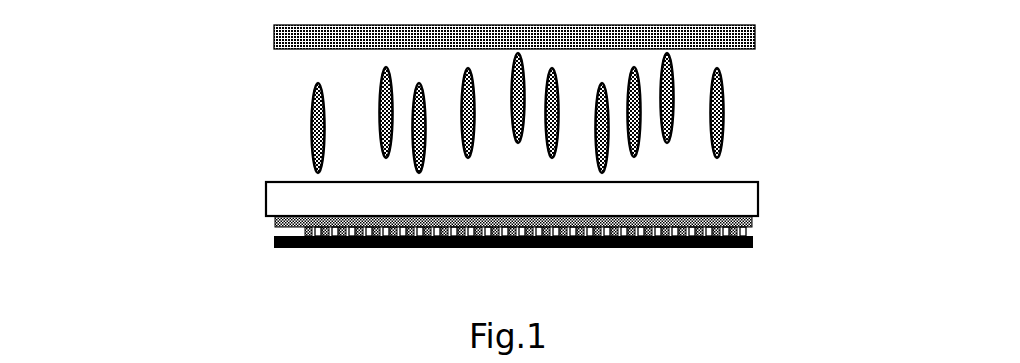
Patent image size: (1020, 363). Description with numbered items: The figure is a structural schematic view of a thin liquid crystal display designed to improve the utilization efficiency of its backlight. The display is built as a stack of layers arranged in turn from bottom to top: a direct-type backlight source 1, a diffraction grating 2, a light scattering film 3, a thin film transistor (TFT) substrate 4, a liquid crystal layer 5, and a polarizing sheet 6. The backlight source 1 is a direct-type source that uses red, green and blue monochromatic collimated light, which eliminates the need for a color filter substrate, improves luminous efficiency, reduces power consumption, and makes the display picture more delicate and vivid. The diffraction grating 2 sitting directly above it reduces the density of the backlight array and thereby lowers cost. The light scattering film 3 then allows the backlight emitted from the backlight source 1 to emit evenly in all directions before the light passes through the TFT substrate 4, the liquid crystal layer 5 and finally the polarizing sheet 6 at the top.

The direct-type backlight source 1 is at (274, 243).
The diffraction grating 2 is at (747, 232).
The light scattering film 3 is at (275, 221).
The thin film transistor (TFT) substrate 4 is at (758, 199).
The liquid crystal layer 5 is at (734, 106).
The polarizing sheet 6 is at (755, 36).